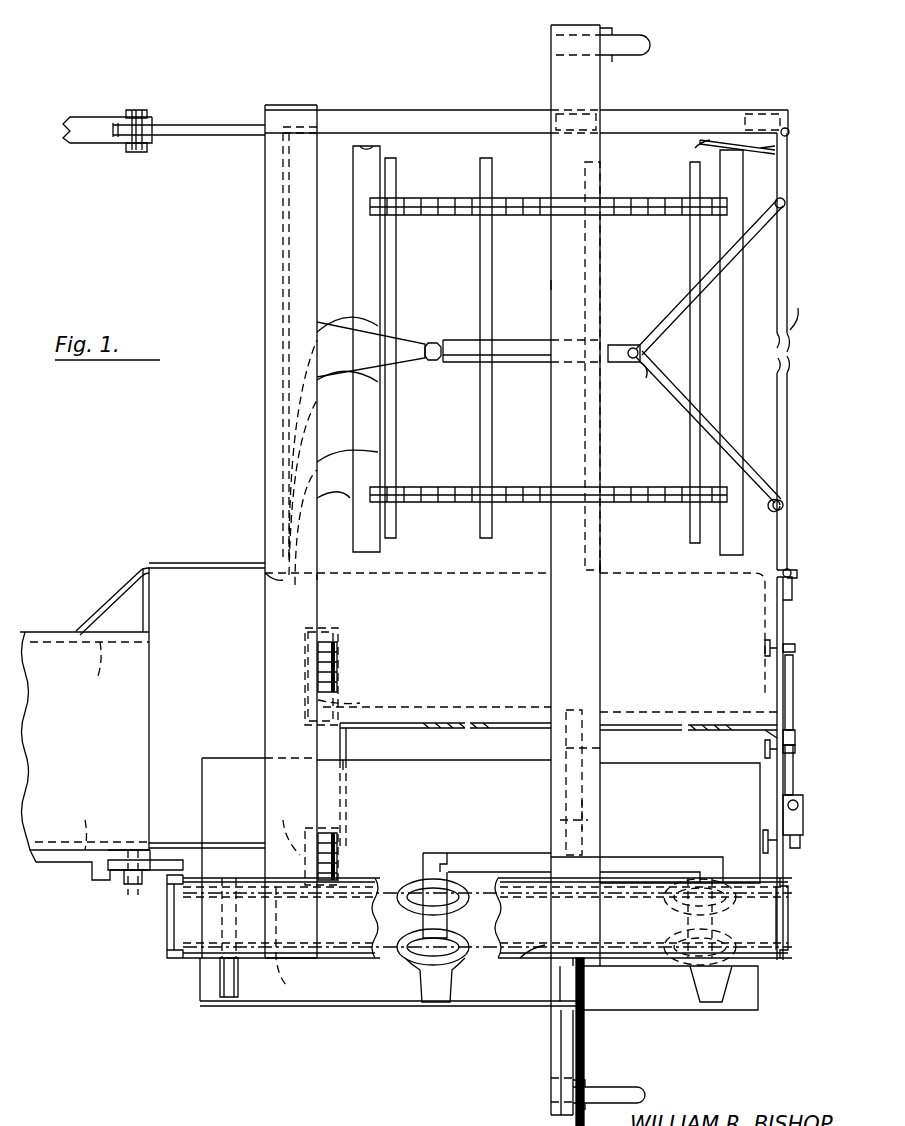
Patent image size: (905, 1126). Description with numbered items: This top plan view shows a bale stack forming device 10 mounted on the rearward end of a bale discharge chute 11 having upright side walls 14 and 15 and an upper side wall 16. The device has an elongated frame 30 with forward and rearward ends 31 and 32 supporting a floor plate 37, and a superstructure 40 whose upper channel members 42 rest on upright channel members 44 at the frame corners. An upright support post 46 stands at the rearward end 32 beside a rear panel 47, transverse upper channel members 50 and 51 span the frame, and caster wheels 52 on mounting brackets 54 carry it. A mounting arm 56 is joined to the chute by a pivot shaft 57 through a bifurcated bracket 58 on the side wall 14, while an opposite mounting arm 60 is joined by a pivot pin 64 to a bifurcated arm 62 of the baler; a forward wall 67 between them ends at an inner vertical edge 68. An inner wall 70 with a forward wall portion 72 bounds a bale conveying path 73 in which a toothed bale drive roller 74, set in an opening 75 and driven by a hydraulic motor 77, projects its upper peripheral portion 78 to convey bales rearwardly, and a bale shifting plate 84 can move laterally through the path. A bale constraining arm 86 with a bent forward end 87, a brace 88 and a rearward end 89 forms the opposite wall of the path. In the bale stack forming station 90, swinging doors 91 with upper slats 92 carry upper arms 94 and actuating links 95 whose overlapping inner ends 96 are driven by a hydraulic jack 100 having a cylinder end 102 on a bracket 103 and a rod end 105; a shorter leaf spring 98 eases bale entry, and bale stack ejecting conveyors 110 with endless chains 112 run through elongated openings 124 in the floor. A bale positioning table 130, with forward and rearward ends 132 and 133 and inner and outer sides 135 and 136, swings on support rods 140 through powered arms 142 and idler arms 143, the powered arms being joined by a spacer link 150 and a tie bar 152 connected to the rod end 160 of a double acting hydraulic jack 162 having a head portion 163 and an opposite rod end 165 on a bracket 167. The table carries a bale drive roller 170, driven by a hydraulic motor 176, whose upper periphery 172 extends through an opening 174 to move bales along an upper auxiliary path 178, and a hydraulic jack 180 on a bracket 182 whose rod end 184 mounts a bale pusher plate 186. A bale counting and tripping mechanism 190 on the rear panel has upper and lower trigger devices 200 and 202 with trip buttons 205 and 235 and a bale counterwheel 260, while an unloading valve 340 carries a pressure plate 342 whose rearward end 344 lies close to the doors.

The bale stack forming device 10 is at (242, 504).
The bale discharge chute 11 is at (46, 623).
The side wall 14 is at (85, 820).
The side wall 15 is at (96, 676).
The upper side wall 16 is at (92, 745).
The frame 30 is at (517, 103).
The forward end 31 is at (170, 926).
The rearward end 32 is at (792, 930).
The floor plate 37 is at (658, 569).
The superstructure 40 is at (600, 122).
The upper channel members 42 is at (648, 960).
The upright channel members 44 is at (176, 942).
The upright support post 46 is at (786, 600).
The rear panel 47 is at (777, 623).
The transverse upper channel member 50 is at (263, 425).
The transverse upper channel member 51 is at (575, 608).
The caster wheels 52 is at (650, 40).
The mounting brackets 54 is at (551, 70).
The mounting arm 56 is at (160, 872).
The pivot shaft 57 is at (122, 888).
The bifurcated bracket 58 is at (92, 876).
The mounting arm 60 is at (210, 137).
The bifurcated arm 62 is at (92, 128).
The pivot pin 64 is at (146, 113).
The forward wall 67 is at (289, 265).
The inner vertical edge 68 is at (291, 566).
The inner wall 70 is at (432, 722).
The forward wall portion 72 is at (348, 770).
The bale conveying path 73 is at (440, 644).
The toothed bale drive roller 74 is at (337, 660).
The opening 75 is at (338, 686).
The hydraulic motor 77 is at (360, 703).
The upper peripheral portion 78 is at (305, 660).
The bale shifting plate 84 is at (632, 725).
The bale constraining arm 86 is at (185, 563).
The angularly bent forward end 87 is at (110, 600).
The brace 88 is at (151, 604).
The rearward end 89 is at (272, 580).
The bale stack forming station 90 is at (535, 287).
The swinging doors 91 is at (796, 334).
The upper slats 92 is at (788, 258).
The upper arms 94 is at (786, 176).
The actuating links 95 is at (688, 318).
The overlapping inner ends 96 is at (641, 364).
The shorter leaf spring 98 is at (346, 498).
The hydraulic jack 100 is at (545, 370).
The cylinder end 102 is at (462, 362).
The bracket 103 is at (400, 345).
The rod end 105 is at (610, 345).
The bale stack ejecting conveyors 110 is at (631, 192).
The endless chain 112 is at (457, 200).
The elongated openings 124 is at (365, 146).
The bale positioning table 130 is at (478, 812).
The forward end 132 is at (202, 760).
The rearward end 133 is at (770, 850).
The inner side 135 is at (466, 760).
The outer side 136 is at (355, 1006).
The support rods 140 is at (282, 975).
The powered arms 142 is at (442, 990).
The idler arms 143 is at (218, 986).
The spacer link 150 is at (470, 906).
The tie bar 152 is at (632, 857).
The rod end 160 is at (560, 855).
The double acting hydraulic jack 162 is at (560, 820).
The intermediate head portion 163 is at (585, 815).
The rod end 165 is at (566, 776).
The bracket 167 is at (600, 747).
The bale drive roller 170 is at (283, 822).
The upper periphery 172 is at (337, 858).
The opening 174 is at (337, 833).
The hydraulic motor 176 is at (364, 958).
The upper auxiliary path 178 is at (665, 804).
The hydraulic jack 180 is at (596, 1043).
The bracket 182 is at (558, 1004).
The rod end 184 is at (560, 982).
The bale pusher plate 186 is at (553, 936).
The bale counting and tripping mechanism 190 is at (765, 729).
The upper trigger device 200 is at (794, 746).
The lower trigger device 202 is at (800, 653).
The trip button 205 is at (765, 749).
The trip button 235 is at (765, 648).
The bale counterwheel 260 is at (783, 828).
The unloading valve 340 is at (725, 118).
The pressure plate 342 is at (706, 140).
The rearward end 344 is at (787, 190).